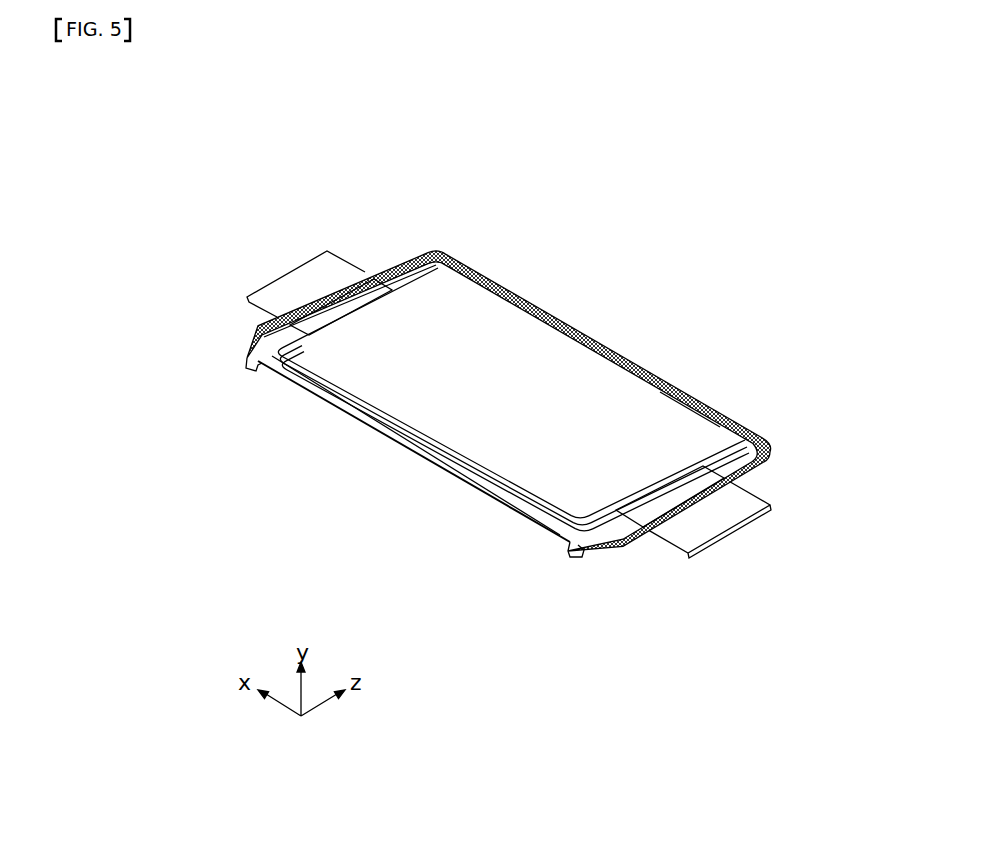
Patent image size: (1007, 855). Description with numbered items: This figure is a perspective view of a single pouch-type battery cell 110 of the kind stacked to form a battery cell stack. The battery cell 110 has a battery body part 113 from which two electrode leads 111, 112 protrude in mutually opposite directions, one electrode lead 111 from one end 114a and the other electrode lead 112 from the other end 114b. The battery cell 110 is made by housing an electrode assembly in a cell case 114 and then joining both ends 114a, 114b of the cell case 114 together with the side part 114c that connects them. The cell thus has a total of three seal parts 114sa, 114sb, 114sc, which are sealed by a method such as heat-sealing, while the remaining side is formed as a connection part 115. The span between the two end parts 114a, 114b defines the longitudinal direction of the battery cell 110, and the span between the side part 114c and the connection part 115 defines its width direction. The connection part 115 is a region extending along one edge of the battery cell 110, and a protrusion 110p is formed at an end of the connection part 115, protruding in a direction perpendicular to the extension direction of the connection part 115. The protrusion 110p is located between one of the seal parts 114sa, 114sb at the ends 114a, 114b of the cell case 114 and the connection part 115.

The battery cell 110 is at (205, 153).
The protrusion 110p is at (246, 356).
The electrode lead 111 is at (302, 280).
The electrode lead 112 is at (734, 527).
The battery body part 113 is at (517, 337).
The cell case 114 is at (546, 406).
The one end 114a is at (509, 406).
The other end 114b is at (607, 538).
The side part 114c is at (509, 443).
The seal part 114sa is at (388, 258).
The seal part 114sb is at (764, 472).
The seal part 114sc is at (697, 402).
The connection part 115 is at (442, 462).